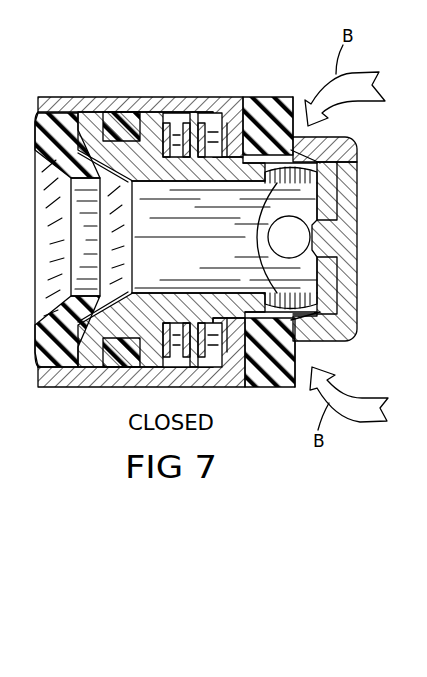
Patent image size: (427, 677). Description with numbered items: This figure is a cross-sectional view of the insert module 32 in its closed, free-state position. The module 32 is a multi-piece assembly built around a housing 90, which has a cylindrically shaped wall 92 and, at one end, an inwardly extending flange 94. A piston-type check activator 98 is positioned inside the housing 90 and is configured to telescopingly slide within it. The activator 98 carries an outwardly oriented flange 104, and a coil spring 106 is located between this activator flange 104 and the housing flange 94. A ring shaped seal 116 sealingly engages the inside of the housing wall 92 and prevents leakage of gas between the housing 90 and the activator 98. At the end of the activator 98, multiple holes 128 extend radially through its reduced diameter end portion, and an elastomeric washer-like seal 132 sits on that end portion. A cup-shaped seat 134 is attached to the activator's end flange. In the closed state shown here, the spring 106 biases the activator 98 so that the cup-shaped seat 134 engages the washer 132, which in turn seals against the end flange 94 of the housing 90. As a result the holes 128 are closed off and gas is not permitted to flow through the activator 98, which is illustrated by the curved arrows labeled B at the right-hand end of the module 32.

The module 32 is at (94, 62).
The housing 90 is at (122, 392).
The cylindrically shaped wall 92 is at (133, 97).
The inwardly extending flange 94 is at (235, 110).
The piston-type check activator 98 is at (139, 178).
The outwardly oriented flange 104 is at (152, 118).
The coil spring 106 is at (186, 138).
The ring shaped seal 116 is at (36, 128).
The holes 128 is at (272, 258).
The elastomeric washer-like seal 132 is at (272, 98).
The cup-shaped seat 134 is at (359, 156).